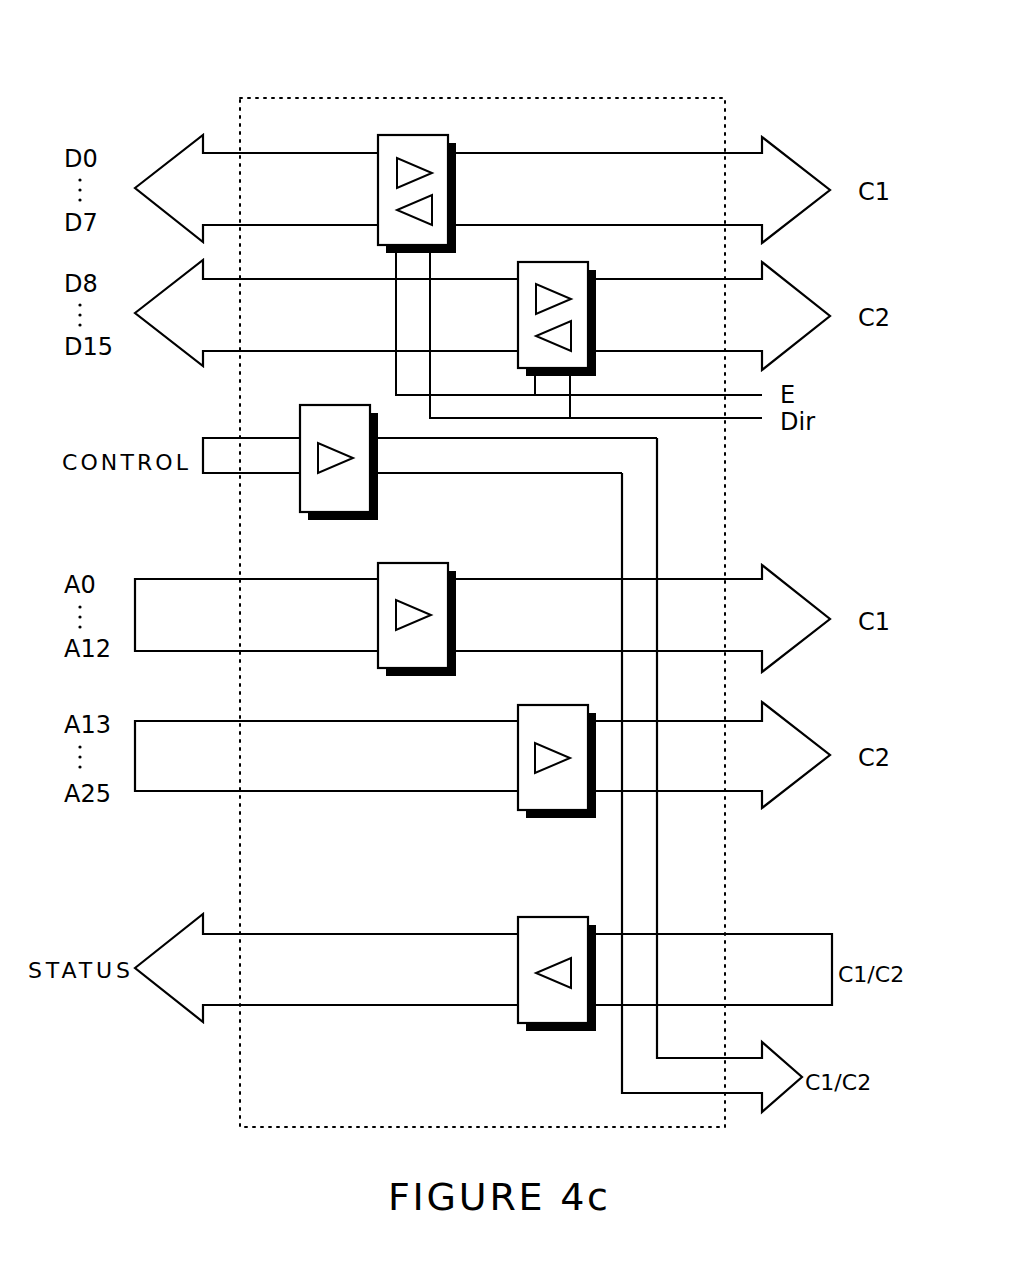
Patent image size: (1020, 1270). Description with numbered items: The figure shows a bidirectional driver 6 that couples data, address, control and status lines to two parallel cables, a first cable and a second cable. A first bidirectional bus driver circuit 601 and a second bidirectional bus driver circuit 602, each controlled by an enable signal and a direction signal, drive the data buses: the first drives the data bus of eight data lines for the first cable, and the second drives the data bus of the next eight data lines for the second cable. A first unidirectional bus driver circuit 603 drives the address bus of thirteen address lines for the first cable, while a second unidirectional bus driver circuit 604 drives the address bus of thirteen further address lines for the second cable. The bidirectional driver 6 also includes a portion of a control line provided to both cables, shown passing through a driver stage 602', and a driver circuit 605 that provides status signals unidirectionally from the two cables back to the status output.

The bidirectional driver 6 is at (543, 100).
The first bidirectional bus driver circuit 601 is at (413, 135).
The second bidirectional bus driver circuit 602 is at (603, 215).
The control signal buffer 602' is at (267, 489).
The first unidirectional bus driver circuit 603 is at (414, 563).
The second unidirectional bus driver circuit 604 is at (520, 812).
The driver circuit 605 is at (520, 1025).